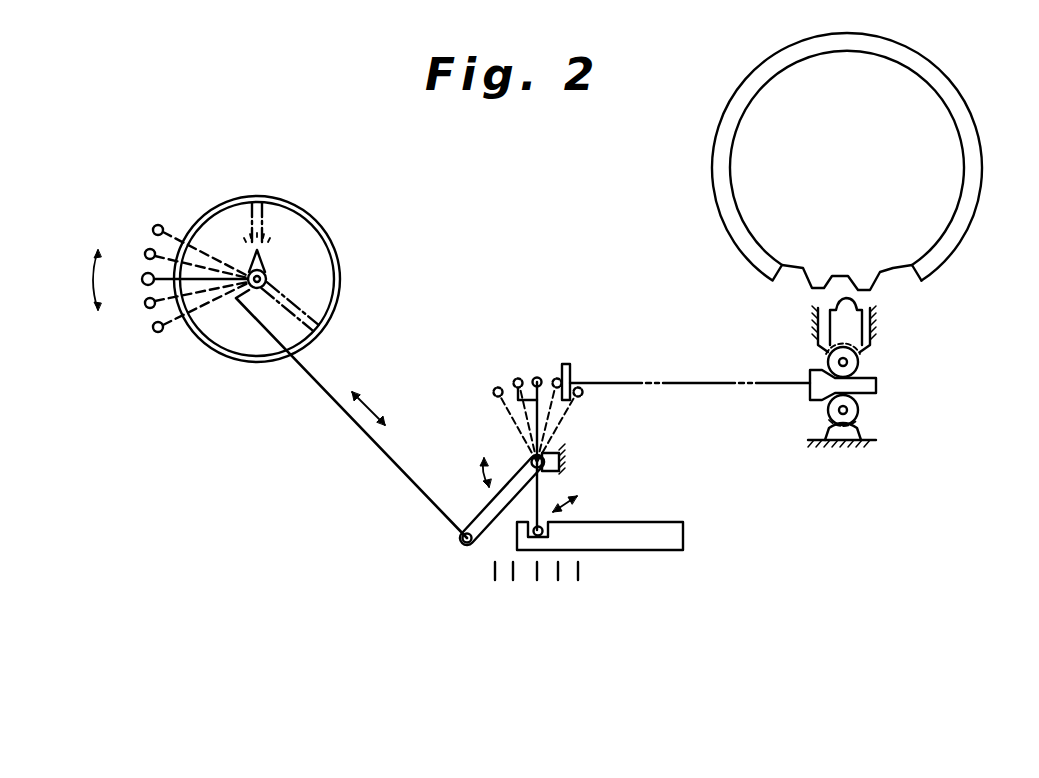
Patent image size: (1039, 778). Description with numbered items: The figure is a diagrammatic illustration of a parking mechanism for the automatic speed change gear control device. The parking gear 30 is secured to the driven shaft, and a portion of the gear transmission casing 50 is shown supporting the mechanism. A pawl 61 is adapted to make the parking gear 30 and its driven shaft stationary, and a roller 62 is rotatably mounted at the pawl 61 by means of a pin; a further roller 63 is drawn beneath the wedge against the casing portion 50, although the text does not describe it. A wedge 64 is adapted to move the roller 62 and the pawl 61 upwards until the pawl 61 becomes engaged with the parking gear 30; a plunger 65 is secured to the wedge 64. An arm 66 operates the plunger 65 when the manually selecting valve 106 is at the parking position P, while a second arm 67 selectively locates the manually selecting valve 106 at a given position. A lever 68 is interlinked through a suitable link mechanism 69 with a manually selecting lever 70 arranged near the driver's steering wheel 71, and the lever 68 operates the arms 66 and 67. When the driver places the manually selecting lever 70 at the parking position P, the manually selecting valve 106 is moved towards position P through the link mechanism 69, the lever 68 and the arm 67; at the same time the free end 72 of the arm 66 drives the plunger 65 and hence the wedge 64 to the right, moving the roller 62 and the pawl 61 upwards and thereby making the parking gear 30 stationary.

The parking gear 30 is at (726, 230).
The portion of the gear transmission casing 50 is at (876, 338).
The pawl 61 is at (828, 308).
The roller 62 is at (860, 357).
The lower roller 63 is at (862, 406).
The wedge 64 is at (815, 398).
The plunger 65 is at (718, 386).
The arm 66 is at (512, 395).
The arm 67 is at (543, 485).
The lever 68 is at (480, 512).
The link mechanism 69 is at (343, 413).
The manually selecting lever 70 is at (172, 278).
The steering wheel 71 is at (307, 214).
The free end 72 is at (538, 377).
The manually selecting valve 106 is at (662, 546).